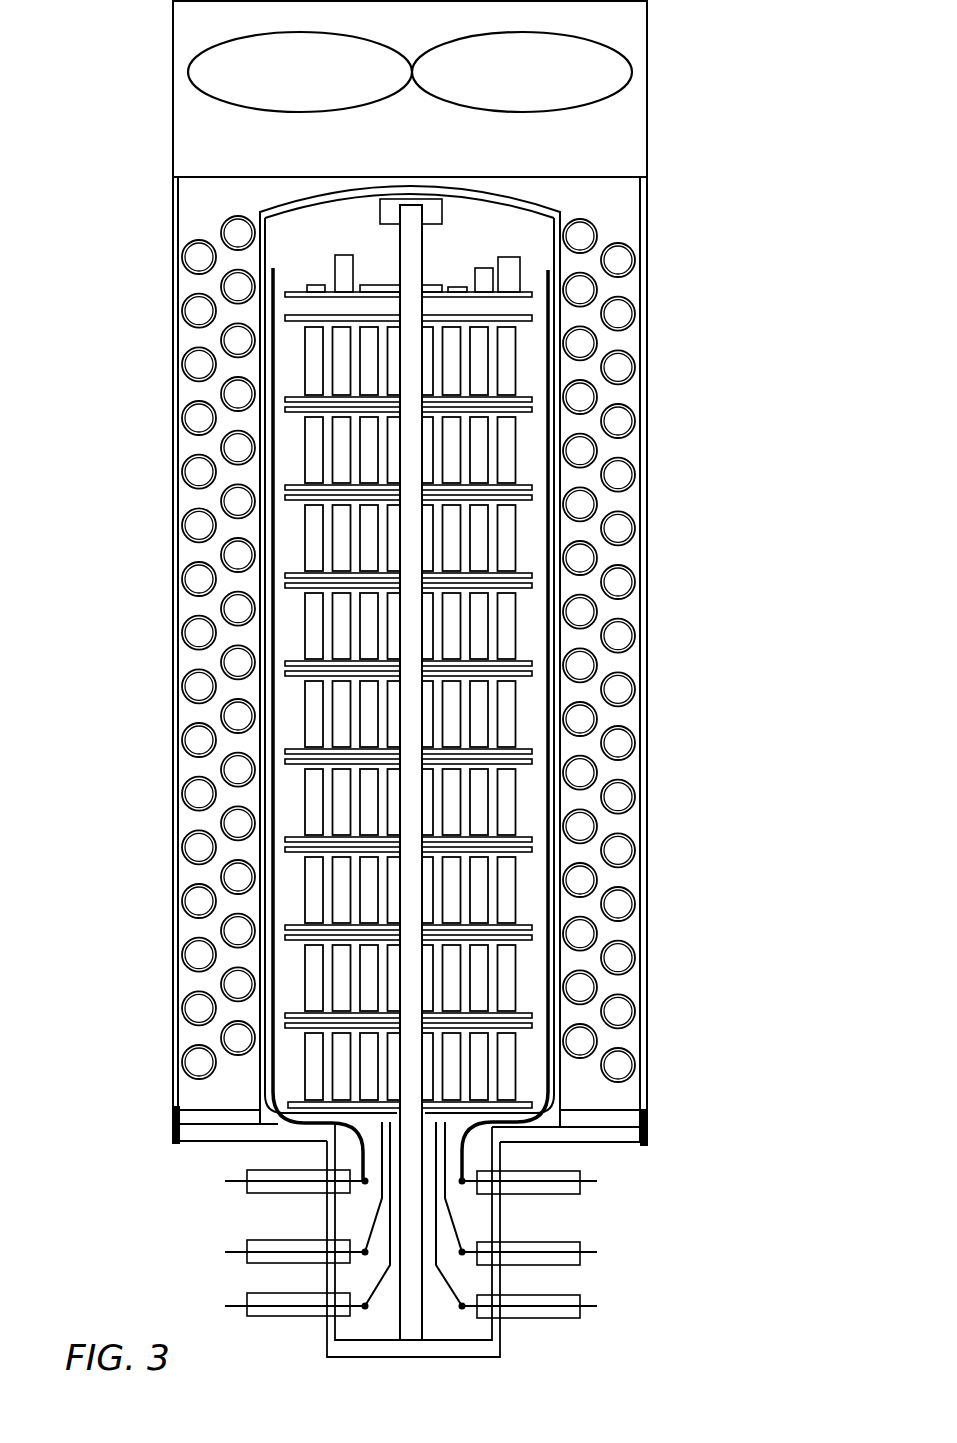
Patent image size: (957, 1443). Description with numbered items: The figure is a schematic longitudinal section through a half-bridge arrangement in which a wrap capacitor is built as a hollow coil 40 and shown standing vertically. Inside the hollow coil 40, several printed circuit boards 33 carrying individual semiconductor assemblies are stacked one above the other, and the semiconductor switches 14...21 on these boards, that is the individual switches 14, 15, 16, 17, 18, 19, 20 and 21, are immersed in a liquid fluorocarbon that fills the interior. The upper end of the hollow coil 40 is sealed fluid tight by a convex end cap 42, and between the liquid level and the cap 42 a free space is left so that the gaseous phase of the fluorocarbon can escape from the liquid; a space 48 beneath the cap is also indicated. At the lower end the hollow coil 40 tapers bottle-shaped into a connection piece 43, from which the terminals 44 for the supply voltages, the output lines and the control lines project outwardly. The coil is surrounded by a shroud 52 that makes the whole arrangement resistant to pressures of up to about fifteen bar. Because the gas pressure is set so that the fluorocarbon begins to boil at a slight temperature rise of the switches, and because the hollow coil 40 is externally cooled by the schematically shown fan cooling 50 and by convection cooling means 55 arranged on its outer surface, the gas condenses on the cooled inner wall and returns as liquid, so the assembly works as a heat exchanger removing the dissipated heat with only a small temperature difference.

The semiconductor switches 14...21 is at (544, 713).
The semiconductor switch 14 is at (314, 713).
The semiconductor switch 15 is at (342, 713).
The semiconductor switch 16 is at (369, 713).
The semiconductor switch 17 is at (397, 713).
The semiconductor switch 18 is at (424, 713).
The semiconductor switch 19 is at (452, 713).
The semiconductor switch 20 is at (479, 713).
The semiconductor switch 21 is at (507, 713).
The printed circuit boards 33 is at (535, 397).
The hollow coil 40 is at (552, 318).
The convex end cap 42 is at (541, 212).
The connection piece 43 is at (497, 1224).
The terminals 44 is at (244, 1240).
The inner housing cover space 48 is at (481, 215).
The fan cooling 50 is at (208, 97).
The shroud 52 is at (560, 910).
The convection cooling means 55 is at (582, 620).